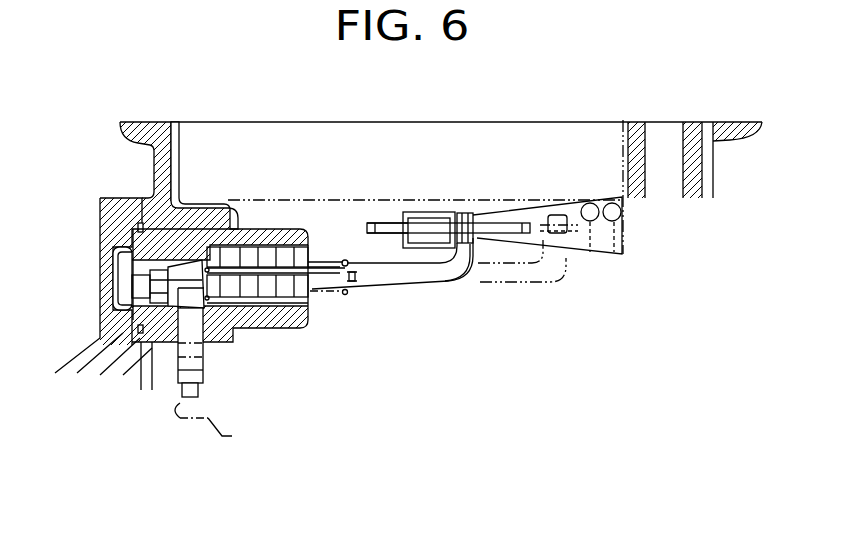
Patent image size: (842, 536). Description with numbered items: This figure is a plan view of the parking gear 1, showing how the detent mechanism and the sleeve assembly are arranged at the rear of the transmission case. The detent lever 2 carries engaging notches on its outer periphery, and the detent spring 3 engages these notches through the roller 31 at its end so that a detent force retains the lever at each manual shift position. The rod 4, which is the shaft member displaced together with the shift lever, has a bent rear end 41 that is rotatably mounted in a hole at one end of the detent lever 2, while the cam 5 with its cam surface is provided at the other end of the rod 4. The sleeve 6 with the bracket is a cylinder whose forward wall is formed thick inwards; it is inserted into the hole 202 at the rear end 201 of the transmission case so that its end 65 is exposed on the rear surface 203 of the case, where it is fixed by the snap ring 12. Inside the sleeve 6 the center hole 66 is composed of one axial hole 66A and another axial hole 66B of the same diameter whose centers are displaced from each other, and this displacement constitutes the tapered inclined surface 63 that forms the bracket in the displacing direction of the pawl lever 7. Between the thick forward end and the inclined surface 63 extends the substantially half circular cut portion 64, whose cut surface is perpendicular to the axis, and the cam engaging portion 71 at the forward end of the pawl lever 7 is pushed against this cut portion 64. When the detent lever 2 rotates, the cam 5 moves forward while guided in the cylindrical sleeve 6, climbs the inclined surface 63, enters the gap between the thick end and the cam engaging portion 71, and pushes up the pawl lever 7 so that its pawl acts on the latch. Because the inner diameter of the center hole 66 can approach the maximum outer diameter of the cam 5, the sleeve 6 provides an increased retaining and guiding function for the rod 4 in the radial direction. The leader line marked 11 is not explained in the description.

The parking gear 1 is at (73, 360).
The detent lever 2 is at (382, 236).
The detent spring 3 is at (598, 256).
The rod 4 is at (470, 273).
The cam 5 is at (130, 277).
The sleeve with bracket 6 is at (300, 317).
The pawl lever with pawl 7 is at (190, 348).
The fitting 11 is at (345, 293).
The snap ring 12 is at (138, 327).
The roller 31 is at (433, 244).
The rear end of the rod 41 is at (473, 218).
The inclined surface 63 is at (237, 227).
The cut portion 64 is at (186, 400).
The end of the sleeve 65 is at (115, 251).
The center hole 66 is at (278, 300).
The hole 66A is at (300, 230).
The hole 66B is at (157, 313).
The cam engaging portion 71 is at (192, 322).
The rear end of the transmission case 201 is at (143, 190).
The hole 202 is at (200, 227).
The rear surface of the case 203 is at (105, 197).